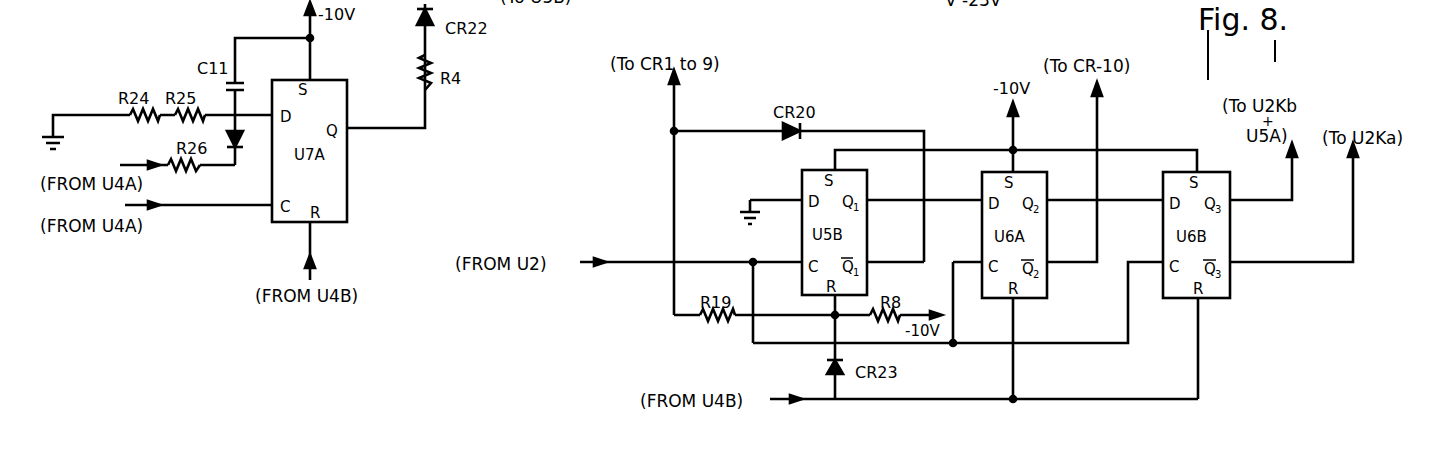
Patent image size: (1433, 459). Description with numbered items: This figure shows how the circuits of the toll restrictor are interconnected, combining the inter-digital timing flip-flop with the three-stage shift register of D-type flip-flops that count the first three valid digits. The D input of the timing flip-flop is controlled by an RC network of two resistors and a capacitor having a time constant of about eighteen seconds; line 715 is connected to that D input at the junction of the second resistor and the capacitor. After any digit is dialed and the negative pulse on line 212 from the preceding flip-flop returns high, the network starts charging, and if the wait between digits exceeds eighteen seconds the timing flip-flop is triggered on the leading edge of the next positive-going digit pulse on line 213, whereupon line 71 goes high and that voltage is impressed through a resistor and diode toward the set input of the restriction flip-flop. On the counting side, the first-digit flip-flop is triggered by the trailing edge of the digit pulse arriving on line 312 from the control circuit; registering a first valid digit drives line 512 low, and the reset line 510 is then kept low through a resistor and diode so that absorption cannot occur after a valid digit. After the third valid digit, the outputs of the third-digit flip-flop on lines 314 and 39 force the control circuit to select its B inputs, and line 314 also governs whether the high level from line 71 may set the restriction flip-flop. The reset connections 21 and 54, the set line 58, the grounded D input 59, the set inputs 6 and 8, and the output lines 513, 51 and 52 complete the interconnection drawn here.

The line 715 is at (257, 110).
The line 71 is at (393, 128).
The line 212 is at (134, 155).
The line 213 is at (205, 217).
The reset line from U4B 21 is at (310, 243).
The line 312 is at (622, 262).
The set line to flip-flops 58 is at (885, 149).
The grounded D input of U5B 59 is at (768, 196).
The Q1 output line of U5B 513 is at (908, 212).
The line 512 is at (903, 272).
The set input of U6A 6 is at (1022, 161).
The Q2 output line of U6A 51 is at (1068, 200).
The Q2-bar output line of U6A 52 is at (1068, 262).
The set input of U6B 8 is at (1206, 161).
The line 314 is at (1258, 198).
The line 39 is at (1325, 261).
The reset line of U6A 54 is at (1013, 320).
The line 510 is at (1198, 360).